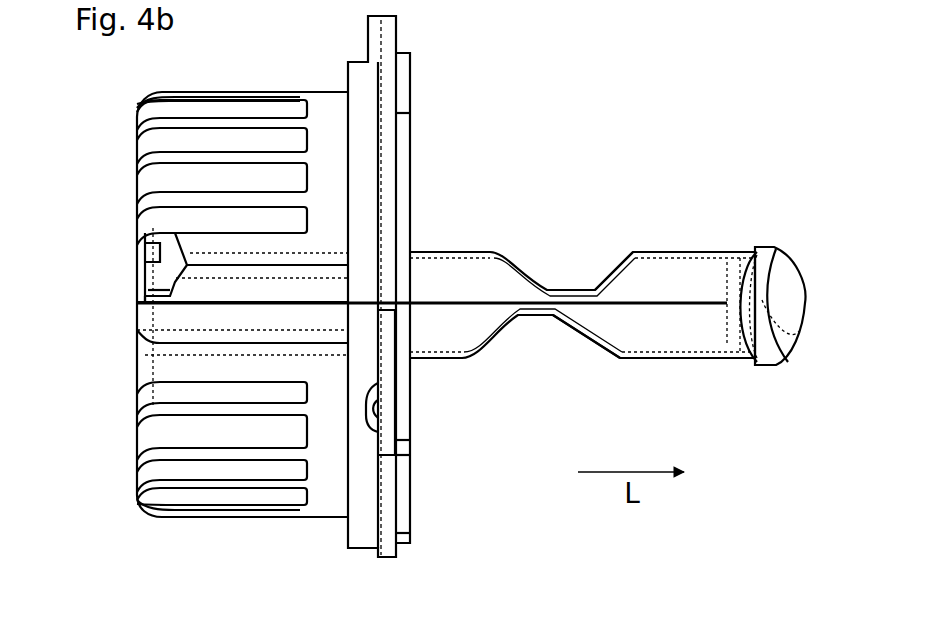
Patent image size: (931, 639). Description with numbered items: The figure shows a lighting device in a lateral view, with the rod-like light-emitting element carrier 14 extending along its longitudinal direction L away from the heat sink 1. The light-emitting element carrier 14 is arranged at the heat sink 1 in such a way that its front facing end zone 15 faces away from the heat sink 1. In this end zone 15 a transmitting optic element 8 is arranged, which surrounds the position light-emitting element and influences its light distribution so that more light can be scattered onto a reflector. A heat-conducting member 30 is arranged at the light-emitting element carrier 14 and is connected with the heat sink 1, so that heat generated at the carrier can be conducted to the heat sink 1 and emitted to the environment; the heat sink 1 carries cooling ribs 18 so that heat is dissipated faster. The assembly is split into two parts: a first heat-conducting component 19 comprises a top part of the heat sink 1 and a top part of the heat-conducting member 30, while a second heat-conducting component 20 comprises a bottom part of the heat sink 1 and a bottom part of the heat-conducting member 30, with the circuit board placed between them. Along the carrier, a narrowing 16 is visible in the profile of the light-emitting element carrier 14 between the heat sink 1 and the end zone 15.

The heat sink 1 is at (322, 108).
The cooling ribs 18 is at (138, 170).
The light-emitting element carrier 14 is at (648, 165).
The end zone of the light-emitting element carrier 15 is at (766, 210).
The narrowing 16 is at (545, 265).
The heat-conducting member 30 is at (654, 282).
The first heat-conducting component 19 is at (694, 277).
The second heat-conducting component 20 is at (706, 338).
The transmitting optic element 8 is at (786, 283).